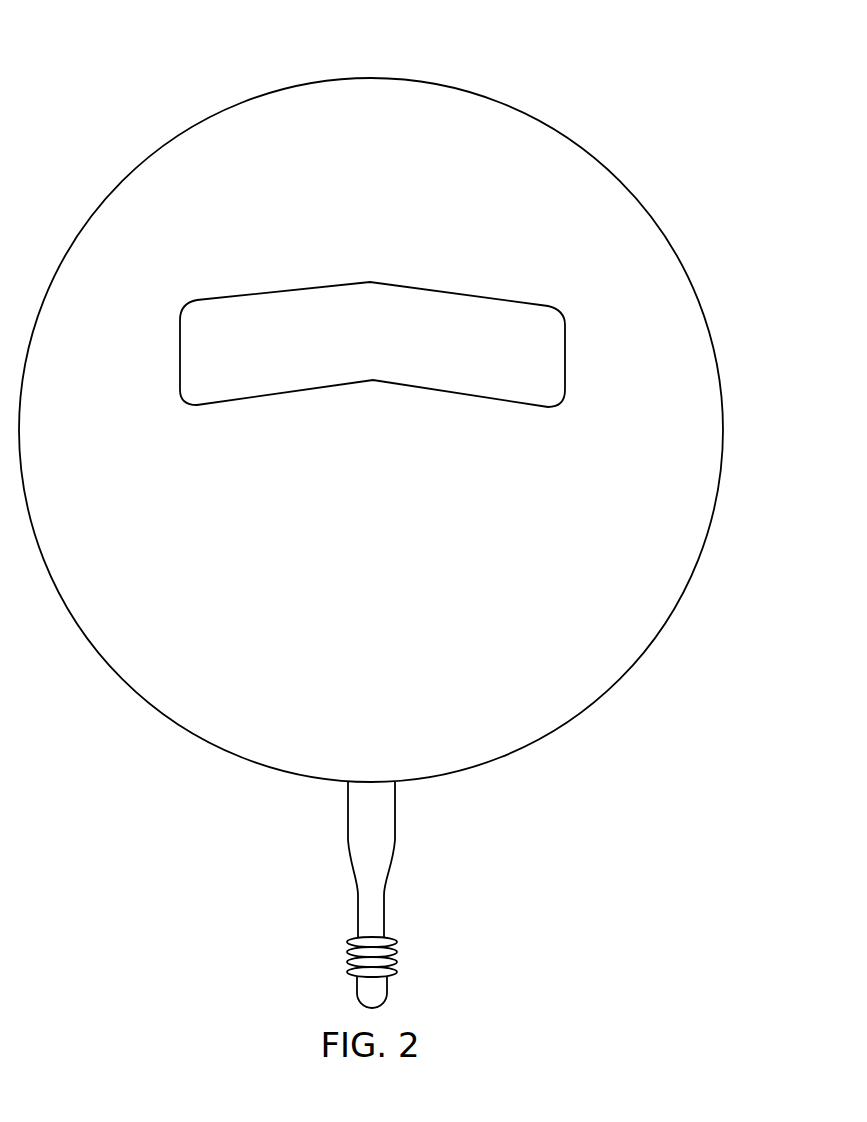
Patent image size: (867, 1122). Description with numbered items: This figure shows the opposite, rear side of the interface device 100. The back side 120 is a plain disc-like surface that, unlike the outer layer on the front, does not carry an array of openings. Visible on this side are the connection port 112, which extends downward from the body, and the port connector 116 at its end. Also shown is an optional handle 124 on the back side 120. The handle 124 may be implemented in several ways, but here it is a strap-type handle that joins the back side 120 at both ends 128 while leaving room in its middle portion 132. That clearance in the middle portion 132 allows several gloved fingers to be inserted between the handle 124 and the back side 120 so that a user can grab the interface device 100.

The interface device 100 is at (441, 80).
The back side 120 is at (563, 152).
The handle 124 is at (510, 335).
The ends 128 is at (233, 334).
The middle portion 132 is at (368, 308).
The connection port 112 is at (397, 812).
The port connector 116 is at (403, 952).